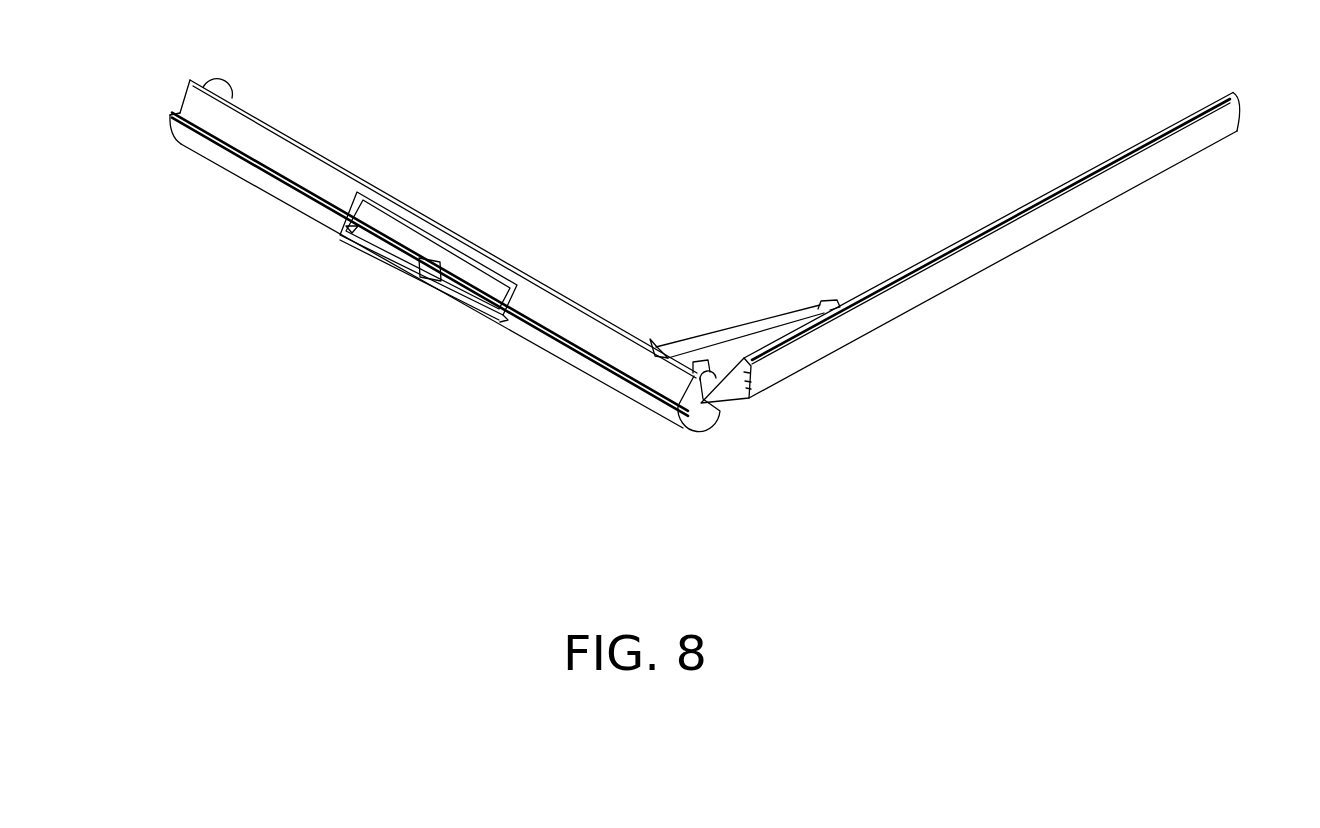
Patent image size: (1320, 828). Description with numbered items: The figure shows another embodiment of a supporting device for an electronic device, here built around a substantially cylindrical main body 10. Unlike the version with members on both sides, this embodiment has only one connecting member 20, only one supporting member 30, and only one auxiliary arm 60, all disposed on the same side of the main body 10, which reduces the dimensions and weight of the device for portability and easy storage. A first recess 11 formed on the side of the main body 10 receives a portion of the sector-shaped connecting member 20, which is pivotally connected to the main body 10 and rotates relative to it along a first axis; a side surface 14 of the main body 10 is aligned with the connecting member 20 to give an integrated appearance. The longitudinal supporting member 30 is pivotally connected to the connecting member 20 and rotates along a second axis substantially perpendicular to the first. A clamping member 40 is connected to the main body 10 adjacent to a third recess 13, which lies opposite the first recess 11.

The main body 10 is at (627, 393).
The first recess 11 is at (708, 368).
The third recess 13 is at (303, 177).
The side surface 14 is at (697, 425).
The connecting member 20 is at (735, 405).
The supporting member 30 is at (888, 303).
The clamping member 40 is at (497, 318).
The auxiliary arm 60 is at (790, 312).